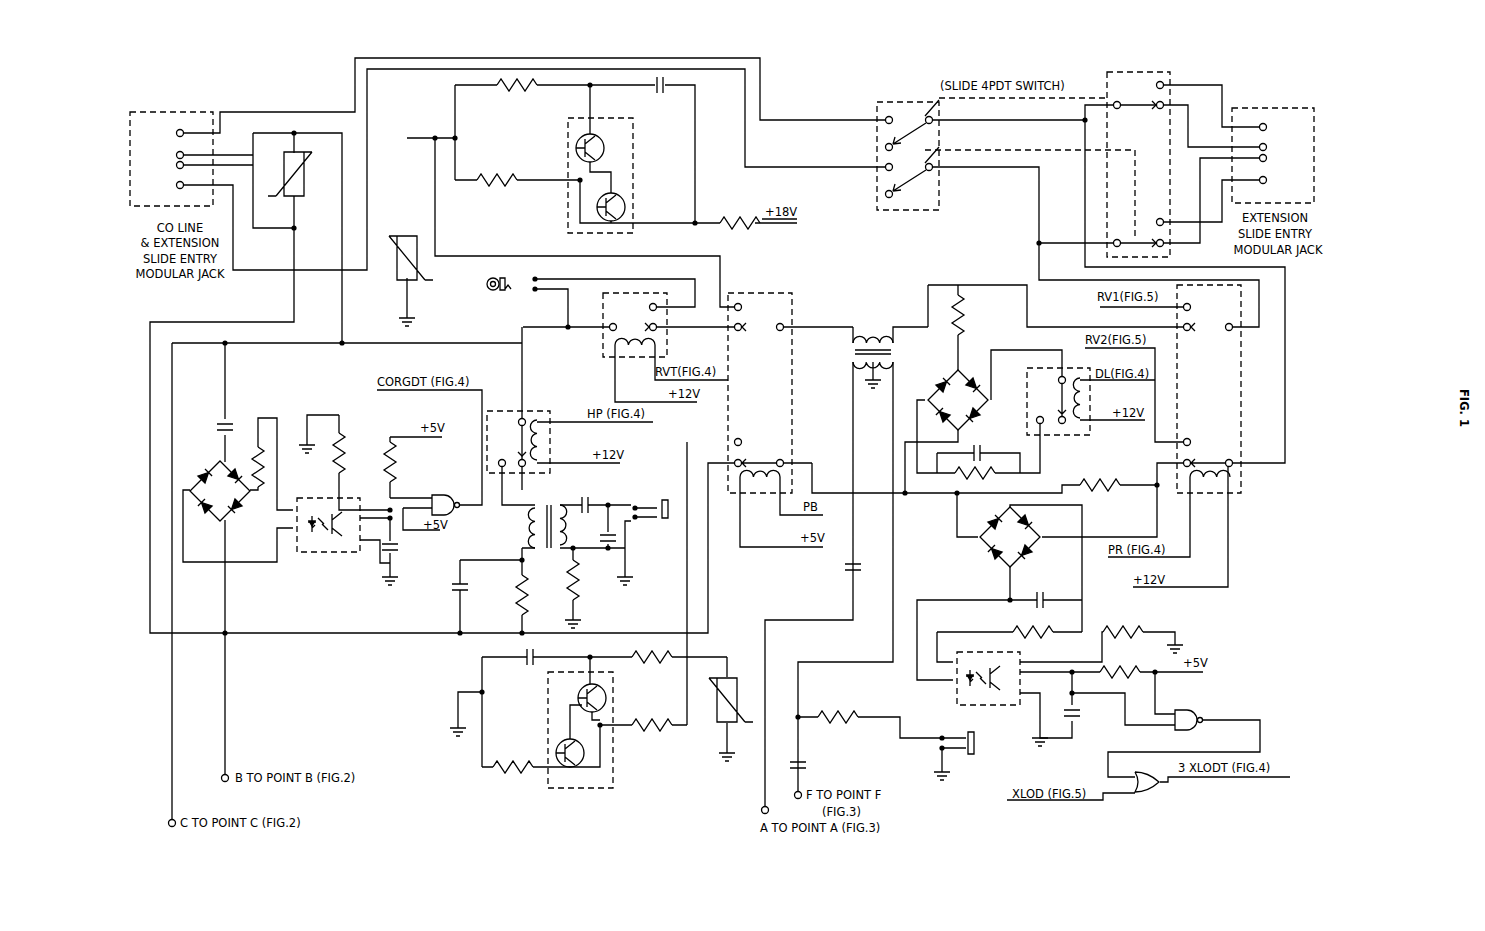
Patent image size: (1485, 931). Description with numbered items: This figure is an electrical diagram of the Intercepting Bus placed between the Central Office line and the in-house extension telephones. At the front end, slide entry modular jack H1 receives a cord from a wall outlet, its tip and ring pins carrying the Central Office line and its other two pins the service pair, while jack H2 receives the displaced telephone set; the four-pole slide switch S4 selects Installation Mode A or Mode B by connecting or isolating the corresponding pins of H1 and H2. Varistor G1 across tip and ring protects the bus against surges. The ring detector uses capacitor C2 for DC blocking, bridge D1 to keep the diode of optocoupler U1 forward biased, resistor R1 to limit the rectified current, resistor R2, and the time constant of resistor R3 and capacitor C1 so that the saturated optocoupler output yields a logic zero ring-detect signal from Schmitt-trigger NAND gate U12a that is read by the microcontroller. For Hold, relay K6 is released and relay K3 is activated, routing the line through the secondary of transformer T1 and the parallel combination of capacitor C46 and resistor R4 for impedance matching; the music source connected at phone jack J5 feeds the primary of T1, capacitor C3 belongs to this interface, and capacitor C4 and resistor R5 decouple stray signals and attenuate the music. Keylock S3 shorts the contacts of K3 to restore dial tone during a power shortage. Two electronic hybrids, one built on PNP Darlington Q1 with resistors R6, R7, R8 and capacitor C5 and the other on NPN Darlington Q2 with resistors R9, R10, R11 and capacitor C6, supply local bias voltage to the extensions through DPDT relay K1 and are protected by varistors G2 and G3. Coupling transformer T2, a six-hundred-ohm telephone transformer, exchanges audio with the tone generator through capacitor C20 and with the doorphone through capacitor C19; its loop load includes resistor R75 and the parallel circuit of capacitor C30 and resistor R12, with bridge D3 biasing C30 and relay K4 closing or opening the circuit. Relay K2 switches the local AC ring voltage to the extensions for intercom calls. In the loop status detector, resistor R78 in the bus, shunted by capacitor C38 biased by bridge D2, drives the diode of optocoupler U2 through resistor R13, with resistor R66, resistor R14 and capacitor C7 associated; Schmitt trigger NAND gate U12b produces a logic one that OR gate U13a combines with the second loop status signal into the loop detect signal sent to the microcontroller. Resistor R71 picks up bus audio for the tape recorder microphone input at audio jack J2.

The slide entry modular jack H1 is at (171, 150).
The varistor G1 is at (304, 174).
The varistor G2 is at (404, 268).
The varistor G3 is at (731, 686).
The resistor R8 is at (517, 94).
The resistor R7 is at (497, 191).
The resistor R6 is at (734, 215).
The capacitor C5 is at (640, 87).
The PNP Darlington Q1 is at (625, 175).
The emergency keylock S3 is at (495, 297).
The relay K6 is at (635, 310).
The DPDT relay K1 is at (768, 393).
The relay K3 is at (526, 432).
The slide switch S4 is at (1023, 158).
The slide entry modular jack H2 is at (1273, 148).
The telephone coupling transformer T2 is at (865, 313).
The resistor R75 is at (984, 312).
The bridge D3 is at (958, 390).
The electrolytic capacitor C30 is at (993, 445).
The resistor R12 is at (968, 480).
The relay K4 is at (1091, 413).
The relay K2 is at (1200, 389).
The resistor R78 is at (1106, 502).
The bridge D2 is at (1010, 546).
The capacitor C38 is at (1073, 597).
The resistor R13 is at (1018, 625).
The resistor R66 is at (1127, 625).
The capacitor C20 is at (815, 577).
The optocoupler U2 is at (955, 679).
The resistor R14 is at (1117, 680).
The capacitor C7 is at (1081, 722).
The Schmitt trigger NAND gate U12b is at (1198, 717).
The OR gate U13a is at (1154, 780).
The resistor R71 is at (846, 725).
The capacitor C19 is at (828, 767).
The audio jack J2 is at (963, 773).
The capacitor C2 is at (248, 414).
The resistor R1 is at (234, 464).
The bridge D1 is at (228, 504).
The optocoupler U1 is at (328, 535).
The resistor R2 is at (314, 453).
The resistor R3 is at (417, 462).
The Schmitt-trigger NAND gate U12a is at (464, 499).
The capacitor C1 is at (419, 541).
The capacitor C46 is at (409, 601).
The resistor R4 is at (502, 602).
The transformer T1 is at (547, 550).
The capacitor C3 is at (581, 498).
The capacitor C4 is at (605, 541).
The resistor R5 is at (591, 580).
The phone jack J5 is at (650, 514).
The capacitor C6 is at (518, 667).
The resistor R10 is at (652, 665).
The resistor R9 is at (652, 717).
The resistor R11 is at (514, 759).
The NPN Darlington Q2 is at (604, 730).